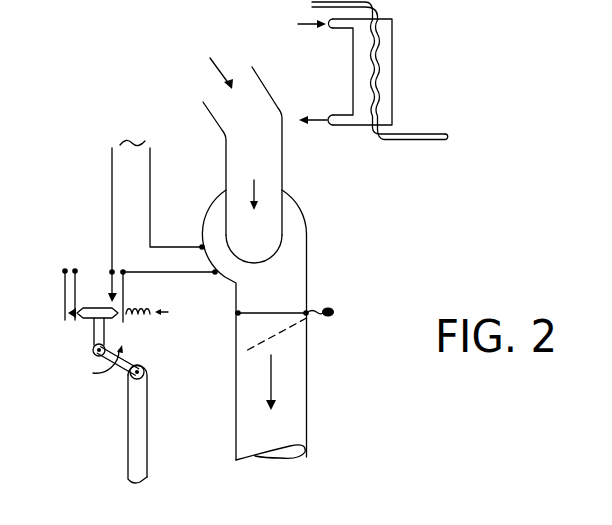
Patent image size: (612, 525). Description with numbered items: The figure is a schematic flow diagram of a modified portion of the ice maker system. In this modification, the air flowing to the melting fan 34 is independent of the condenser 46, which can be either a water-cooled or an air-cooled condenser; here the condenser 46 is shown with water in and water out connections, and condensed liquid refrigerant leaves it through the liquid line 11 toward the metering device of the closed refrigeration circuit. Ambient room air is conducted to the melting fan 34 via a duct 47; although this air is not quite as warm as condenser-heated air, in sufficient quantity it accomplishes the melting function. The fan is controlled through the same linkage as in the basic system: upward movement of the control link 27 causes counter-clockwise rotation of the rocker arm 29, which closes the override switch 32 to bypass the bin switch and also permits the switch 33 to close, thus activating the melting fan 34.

The liquid line 11 is at (425, 145).
The control link 27 is at (167, 434).
The rocker arm 29 is at (108, 334).
The override switch 32 is at (61, 310).
The switch 33 is at (127, 291).
The melting fan 34 is at (307, 255).
The condenser 46 is at (397, 59).
The duct 47 is at (200, 106).